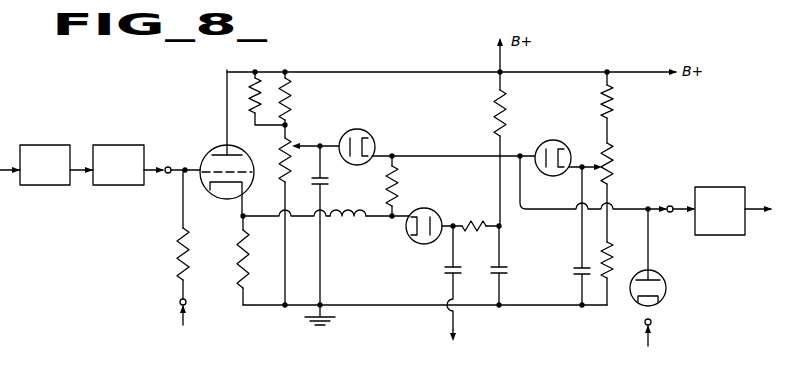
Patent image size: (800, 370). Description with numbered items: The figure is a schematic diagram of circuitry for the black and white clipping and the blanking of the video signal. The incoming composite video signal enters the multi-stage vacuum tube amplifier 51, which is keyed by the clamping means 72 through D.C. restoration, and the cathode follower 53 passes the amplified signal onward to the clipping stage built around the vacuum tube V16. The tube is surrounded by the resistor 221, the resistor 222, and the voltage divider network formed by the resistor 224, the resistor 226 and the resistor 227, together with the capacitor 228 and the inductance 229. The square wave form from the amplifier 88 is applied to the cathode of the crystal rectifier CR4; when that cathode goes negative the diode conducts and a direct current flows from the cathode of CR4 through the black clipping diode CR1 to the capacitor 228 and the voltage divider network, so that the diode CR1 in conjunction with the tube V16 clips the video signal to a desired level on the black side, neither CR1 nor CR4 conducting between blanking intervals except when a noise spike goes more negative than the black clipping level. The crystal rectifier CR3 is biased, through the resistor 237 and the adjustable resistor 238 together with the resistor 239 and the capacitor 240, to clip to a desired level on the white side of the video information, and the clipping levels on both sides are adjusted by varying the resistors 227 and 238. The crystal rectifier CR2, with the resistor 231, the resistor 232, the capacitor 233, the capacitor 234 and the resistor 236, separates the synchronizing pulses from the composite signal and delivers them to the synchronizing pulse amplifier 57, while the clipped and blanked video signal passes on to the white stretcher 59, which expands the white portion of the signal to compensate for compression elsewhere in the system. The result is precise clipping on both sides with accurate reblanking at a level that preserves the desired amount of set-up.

The multi-stage vacuum tube amplifier 51 is at (55, 144).
The cathode follower 53 is at (129, 144).
The white stretcher 59 is at (738, 191).
The vacuum tube V16 is at (211, 140).
The resistor 221 is at (175, 256).
The resistor 222 is at (236, 258).
The resistor 224 is at (247, 100).
The resistor 226 is at (294, 93).
The resistor 227 is at (291, 139).
The capacitor 228 is at (330, 182).
The inductance 229 is at (351, 230).
The resistor 231 is at (400, 185).
The resistor 232 is at (490, 120).
The capacitor 233 is at (448, 277).
The capacitor 234 is at (505, 276).
The resistor 236 is at (472, 218).
The resistor 237 is at (615, 106).
The resistor 238 is at (615, 155).
The resistor 239 is at (612, 248).
The capacitor 240 is at (578, 266).
The black clipping diode CR1 is at (366, 132).
The crystal rectifier CR2 is at (416, 243).
The crystal rectifier CR3 is at (561, 133).
The crystal rectifier CR4 is at (668, 290).
The clamping means 72 is at (167, 330).
The synchronizing pulse amplifier 57 is at (450, 346).
The amplifier 88 is at (663, 340).